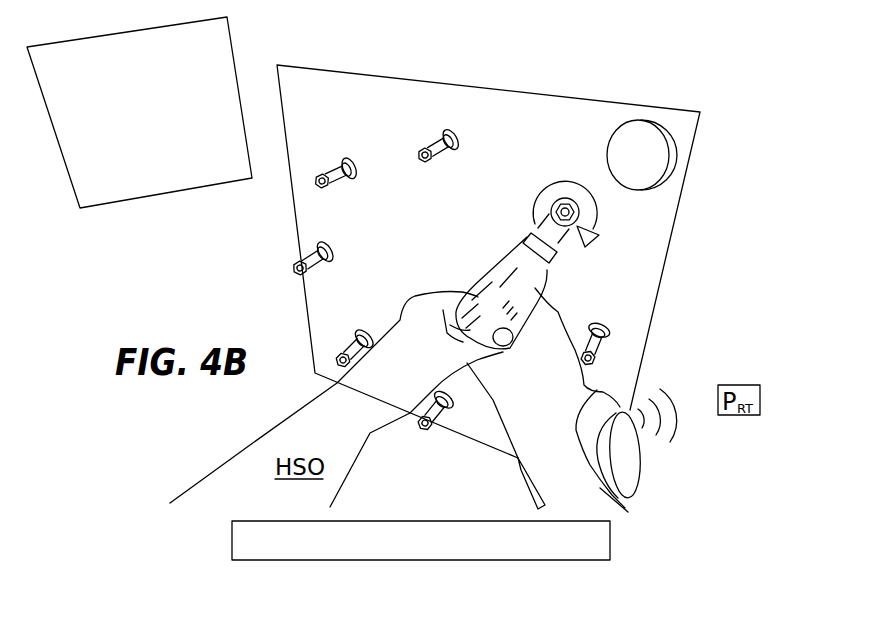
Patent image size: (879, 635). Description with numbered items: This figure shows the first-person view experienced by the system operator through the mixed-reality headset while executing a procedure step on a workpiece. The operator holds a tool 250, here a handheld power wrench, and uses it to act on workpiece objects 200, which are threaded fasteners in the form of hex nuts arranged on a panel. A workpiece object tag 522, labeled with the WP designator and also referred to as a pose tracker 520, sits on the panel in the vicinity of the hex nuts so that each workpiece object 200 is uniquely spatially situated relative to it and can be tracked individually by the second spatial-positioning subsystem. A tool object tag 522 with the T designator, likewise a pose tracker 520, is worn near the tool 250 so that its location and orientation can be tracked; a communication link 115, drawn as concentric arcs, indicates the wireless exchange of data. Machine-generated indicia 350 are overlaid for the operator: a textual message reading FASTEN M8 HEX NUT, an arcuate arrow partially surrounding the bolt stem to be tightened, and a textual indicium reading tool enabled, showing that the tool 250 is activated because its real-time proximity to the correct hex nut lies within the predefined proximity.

The workpiece object 200 is at (326, 175).
The tool 250 is at (533, 285).
The machine-generated indicia 350 is at (98, 165).
The second-subsystem pose tracker 520 is at (705, 282).
The object tag 522 is at (642, 309).
The communication link 115 is at (670, 403).